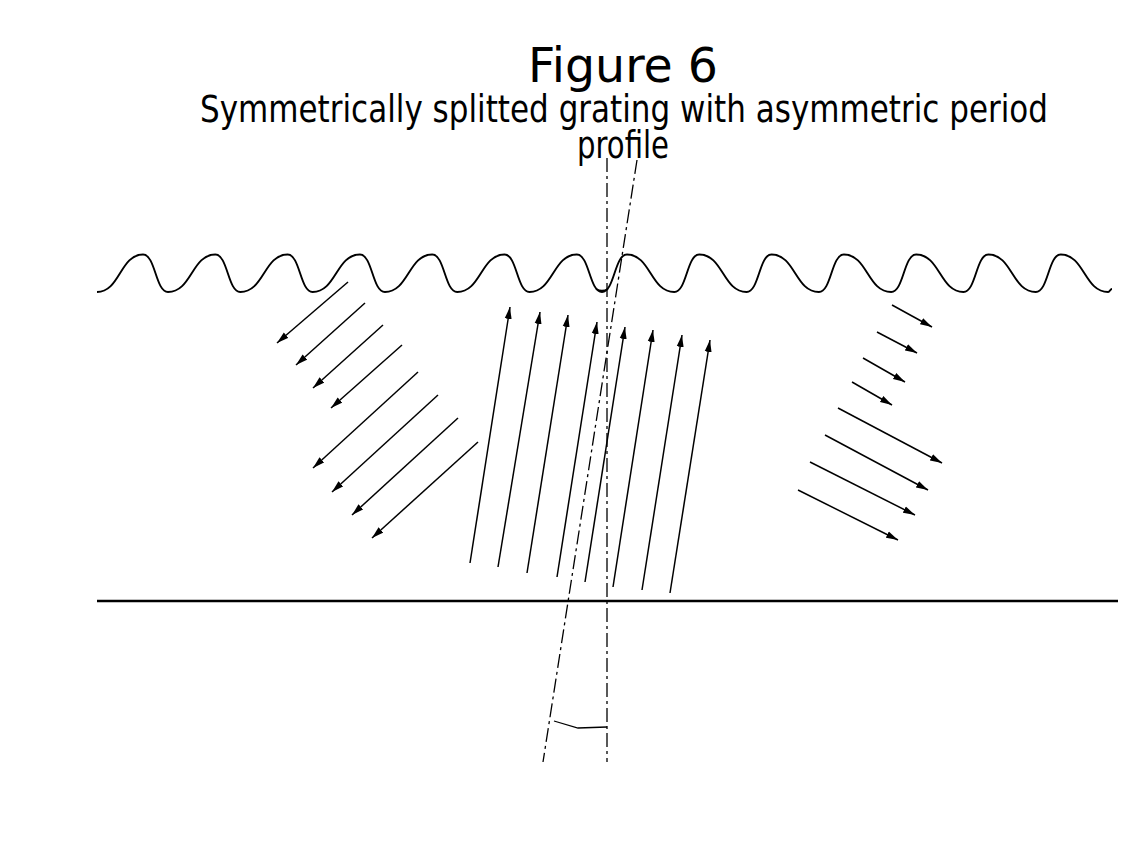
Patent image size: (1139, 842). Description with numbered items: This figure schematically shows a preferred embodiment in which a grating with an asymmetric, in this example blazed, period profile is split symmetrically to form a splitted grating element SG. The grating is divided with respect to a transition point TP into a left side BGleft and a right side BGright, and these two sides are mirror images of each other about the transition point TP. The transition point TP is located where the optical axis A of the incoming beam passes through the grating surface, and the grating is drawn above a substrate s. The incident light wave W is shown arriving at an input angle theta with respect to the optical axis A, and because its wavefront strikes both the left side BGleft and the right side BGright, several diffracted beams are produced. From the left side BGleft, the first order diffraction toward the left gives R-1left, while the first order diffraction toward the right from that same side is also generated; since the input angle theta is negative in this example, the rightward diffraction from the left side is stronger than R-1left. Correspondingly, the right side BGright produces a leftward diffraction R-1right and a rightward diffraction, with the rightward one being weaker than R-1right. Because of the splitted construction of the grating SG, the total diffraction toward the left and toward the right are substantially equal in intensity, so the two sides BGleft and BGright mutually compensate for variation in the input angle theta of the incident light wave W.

The splitted grating element SG is at (585, 216).
The left side of the grating BGleft is at (427, 255).
The right side of the grating BGright is at (980, 258).
The transition point TP is at (604, 288).
The substrate s is at (607, 465).
The first order diffraction towards left from the left side R-1left is at (301, 358).
The first order diffraction towards left from the right side R-1right is at (344, 458).
The incident light wave W is at (590, 450).
The optical axis A is at (611, 643).
The input angle theta is at (578, 728).